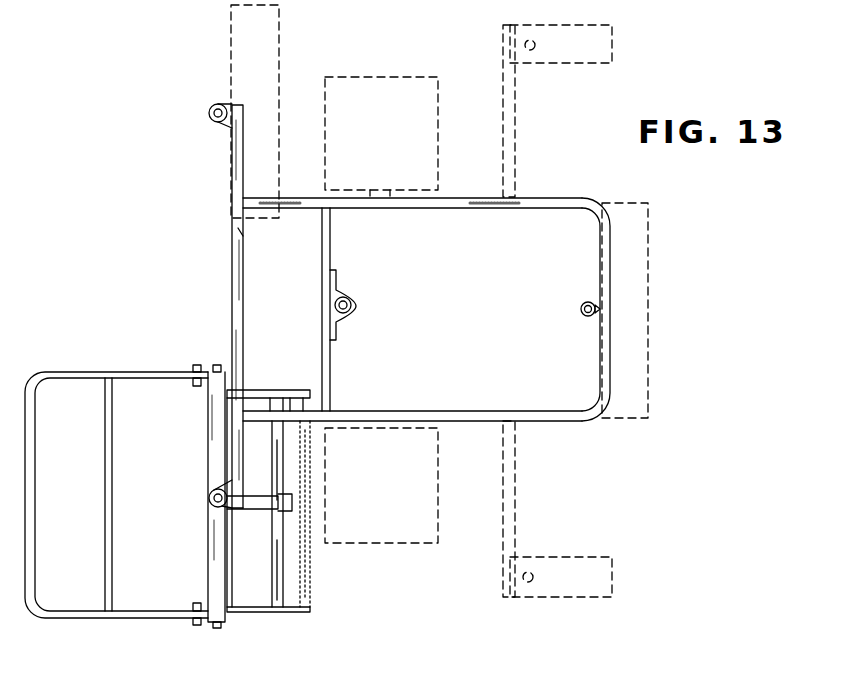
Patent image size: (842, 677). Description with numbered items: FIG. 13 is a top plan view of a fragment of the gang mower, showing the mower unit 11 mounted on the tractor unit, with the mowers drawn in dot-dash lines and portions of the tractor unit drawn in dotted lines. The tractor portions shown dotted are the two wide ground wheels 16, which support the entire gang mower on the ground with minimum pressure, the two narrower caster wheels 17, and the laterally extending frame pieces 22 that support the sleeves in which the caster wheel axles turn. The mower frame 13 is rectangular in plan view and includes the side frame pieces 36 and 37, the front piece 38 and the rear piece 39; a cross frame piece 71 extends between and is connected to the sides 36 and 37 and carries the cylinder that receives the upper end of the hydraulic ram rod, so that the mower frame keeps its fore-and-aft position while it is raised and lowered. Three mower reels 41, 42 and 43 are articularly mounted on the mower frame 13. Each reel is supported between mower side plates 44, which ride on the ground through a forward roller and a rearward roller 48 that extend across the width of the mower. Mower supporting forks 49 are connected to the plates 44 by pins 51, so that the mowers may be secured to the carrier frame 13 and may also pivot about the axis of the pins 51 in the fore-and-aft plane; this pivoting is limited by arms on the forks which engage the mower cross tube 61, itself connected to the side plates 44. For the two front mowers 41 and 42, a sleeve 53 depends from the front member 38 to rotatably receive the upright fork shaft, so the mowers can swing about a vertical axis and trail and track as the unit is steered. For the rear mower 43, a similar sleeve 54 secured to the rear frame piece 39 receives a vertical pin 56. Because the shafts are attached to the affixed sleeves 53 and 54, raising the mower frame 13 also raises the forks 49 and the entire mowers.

The mower unit 11 is at (186, 204).
The mower frame 13 is at (230, 288).
The wide ground wheels 16 is at (432, 150).
The caster wheels 17 is at (568, 64).
The laterally extending frame pieces 22 is at (513, 140).
The side frame piece 36 is at (448, 410).
The side frame piece 37 is at (404, 209).
The front piece 38 is at (240, 232).
The rear piece 39 is at (601, 264).
The mower reel 41 is at (246, 598).
The mower reel 42 is at (233, 81).
The mower reel 43 is at (648, 326).
The mower side plates 44 is at (293, 388).
The rearward roller 48 is at (312, 578).
The mower supporting forks 49 is at (210, 573).
The pins 51 is at (216, 366).
The sleeve 53 is at (209, 490).
The sleeve 54 is at (583, 318).
The vertical pin 56 is at (584, 307).
The mower cross tube 61 is at (277, 540).
The cross frame piece 71 is at (324, 262).